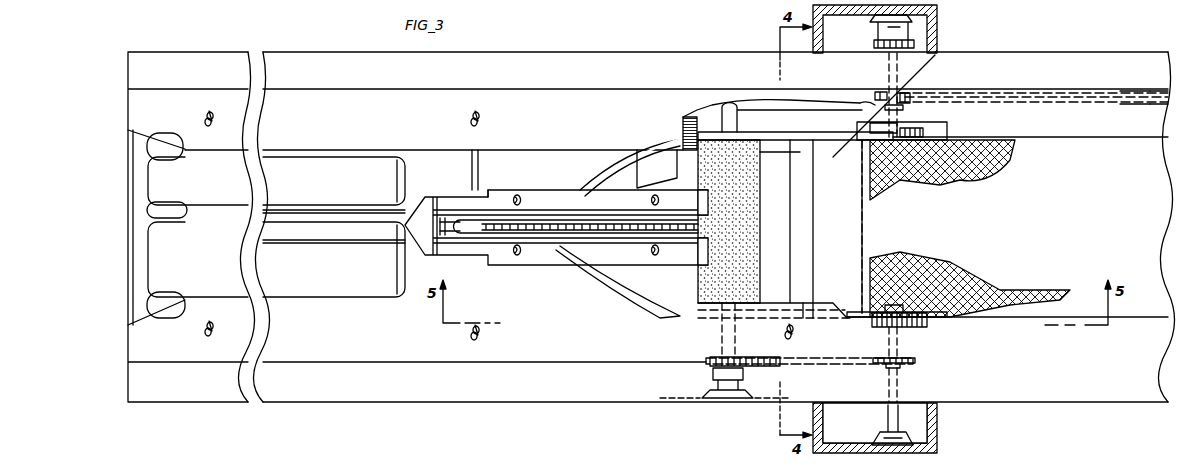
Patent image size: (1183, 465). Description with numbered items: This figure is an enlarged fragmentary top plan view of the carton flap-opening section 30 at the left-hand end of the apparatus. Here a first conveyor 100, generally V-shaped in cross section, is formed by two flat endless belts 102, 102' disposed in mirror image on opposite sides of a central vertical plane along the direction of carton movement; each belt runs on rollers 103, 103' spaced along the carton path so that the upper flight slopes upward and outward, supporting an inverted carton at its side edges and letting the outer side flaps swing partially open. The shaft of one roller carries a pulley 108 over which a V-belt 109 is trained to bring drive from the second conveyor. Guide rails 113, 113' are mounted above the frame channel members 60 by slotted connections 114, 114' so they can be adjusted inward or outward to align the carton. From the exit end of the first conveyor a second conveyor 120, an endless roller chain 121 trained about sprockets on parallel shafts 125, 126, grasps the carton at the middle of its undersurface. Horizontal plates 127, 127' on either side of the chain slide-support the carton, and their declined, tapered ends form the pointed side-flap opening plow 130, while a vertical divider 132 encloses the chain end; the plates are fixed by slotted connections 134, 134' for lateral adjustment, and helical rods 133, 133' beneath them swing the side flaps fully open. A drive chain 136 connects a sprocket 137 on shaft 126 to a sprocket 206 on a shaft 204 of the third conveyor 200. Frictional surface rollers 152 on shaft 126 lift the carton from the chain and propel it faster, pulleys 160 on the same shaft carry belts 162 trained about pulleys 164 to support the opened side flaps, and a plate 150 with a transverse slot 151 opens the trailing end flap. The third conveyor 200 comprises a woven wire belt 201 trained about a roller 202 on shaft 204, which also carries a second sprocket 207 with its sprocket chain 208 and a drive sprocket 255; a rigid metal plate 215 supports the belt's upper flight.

The flap-opening section 30 is at (729, 36).
The channel members 60 is at (565, 70).
The first conveyor 100 is at (305, 146).
The endless belt 102 is at (276, 181).
The endless belt 102' is at (276, 259).
The rollers 103 is at (285, 135).
The rollers 103' is at (285, 320).
The pulley 108 is at (160, 218).
The V-belt 109 is at (308, 213).
The guide rail 113 is at (473, 129).
The guide rail 113' is at (541, 340).
The slotted connection 114 is at (362, 116).
The slotted connection 114' is at (342, 338).
The second conveyor 120 is at (537, 182).
The endless roller chain 121 is at (488, 197).
The shaft 125 is at (470, 163).
The shaft 126 is at (725, 122).
The horizontal plate 127 is at (590, 212).
The horizontal plate 127' is at (613, 248).
The side-flap opening plow 130 is at (420, 225).
The divider 132 is at (430, 255).
The rod 133 is at (628, 164).
The rod 133' is at (610, 282).
The slotted connection 134 is at (586, 202).
The slotted connection 134' is at (572, 266).
The drive chain 136 is at (800, 352).
The sprocket 137 is at (705, 372).
The plate 150 is at (780, 229).
The transverse slot 151 is at (815, 222).
The frictional surface rollers 152 is at (760, 243).
The pulleys 160 is at (748, 132).
The belt 162 is at (833, 140).
The pulley 164 is at (880, 105).
The third conveyor 200 is at (1098, 135).
The woven wire endless belt 201 is at (977, 228).
The roller 202 is at (932, 322).
The shaft 204 is at (900, 340).
The sprocket 206 is at (910, 370).
The second sprocket 207 is at (955, 93).
The sprocket chain 208 is at (1065, 93).
The rigid metal plate 215 is at (1099, 356).
The drive sprocket 255 is at (915, 48).